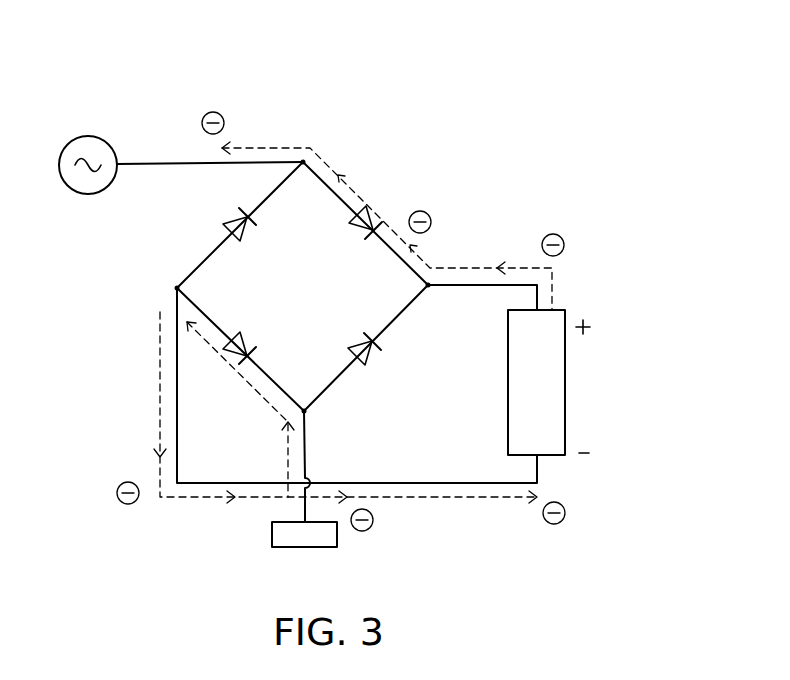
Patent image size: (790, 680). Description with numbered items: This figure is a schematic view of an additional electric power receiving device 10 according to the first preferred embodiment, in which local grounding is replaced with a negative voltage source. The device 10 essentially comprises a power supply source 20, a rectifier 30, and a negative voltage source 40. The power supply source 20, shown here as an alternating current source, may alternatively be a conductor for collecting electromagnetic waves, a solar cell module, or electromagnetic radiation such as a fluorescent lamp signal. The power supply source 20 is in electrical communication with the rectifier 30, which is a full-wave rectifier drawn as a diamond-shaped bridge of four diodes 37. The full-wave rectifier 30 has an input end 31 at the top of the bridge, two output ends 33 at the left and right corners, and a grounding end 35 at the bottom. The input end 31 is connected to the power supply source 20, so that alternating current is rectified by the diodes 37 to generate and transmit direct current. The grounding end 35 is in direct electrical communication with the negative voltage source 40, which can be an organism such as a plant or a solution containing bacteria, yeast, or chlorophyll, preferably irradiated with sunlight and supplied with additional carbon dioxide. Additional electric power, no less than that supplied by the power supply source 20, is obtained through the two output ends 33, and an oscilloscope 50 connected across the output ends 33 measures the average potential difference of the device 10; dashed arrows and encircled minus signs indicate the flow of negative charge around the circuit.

The electric power receiving device 10 is at (405, 82).
The power supply source 20 is at (72, 137).
The rectifier 30 is at (415, 175).
The input end 31 is at (310, 150).
The output ends 33 is at (177, 290).
The grounding end 35 is at (307, 413).
The diodes 37 is at (220, 217).
The negative voltage source 40 is at (260, 542).
The oscilloscope 50 is at (565, 388).